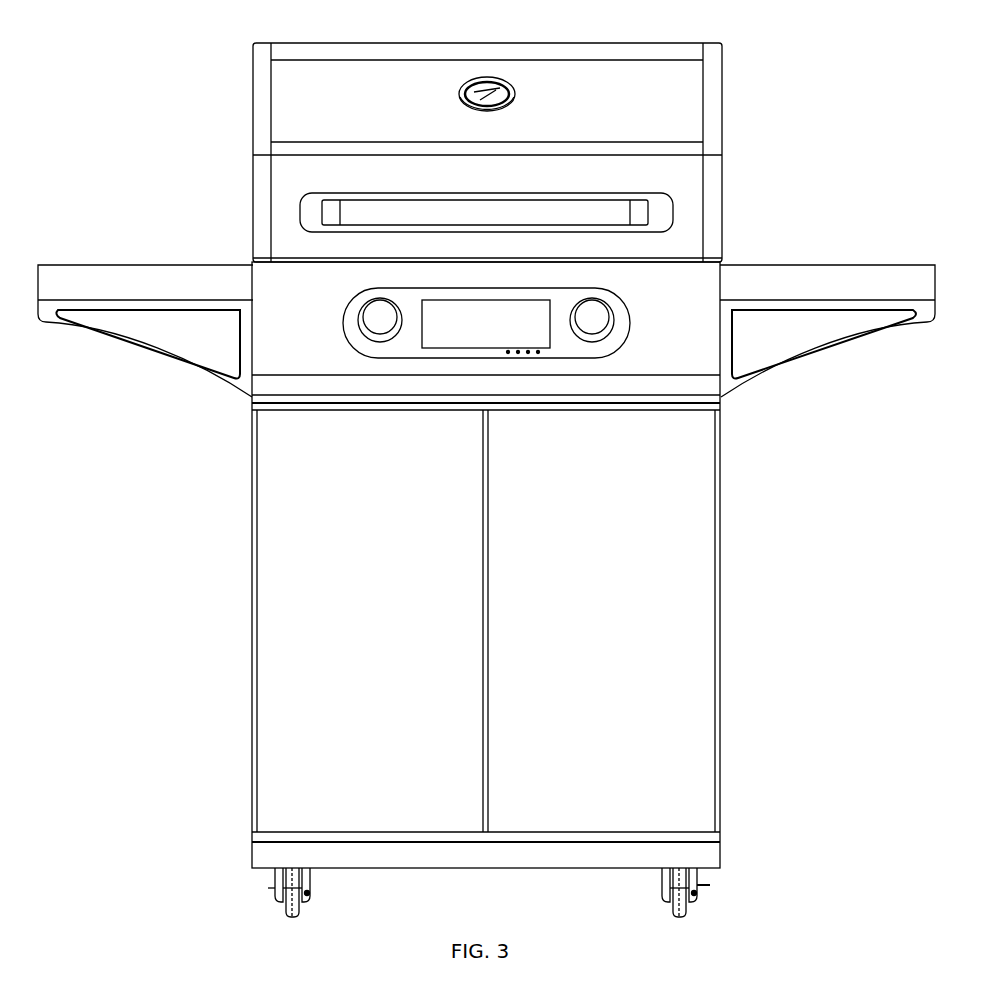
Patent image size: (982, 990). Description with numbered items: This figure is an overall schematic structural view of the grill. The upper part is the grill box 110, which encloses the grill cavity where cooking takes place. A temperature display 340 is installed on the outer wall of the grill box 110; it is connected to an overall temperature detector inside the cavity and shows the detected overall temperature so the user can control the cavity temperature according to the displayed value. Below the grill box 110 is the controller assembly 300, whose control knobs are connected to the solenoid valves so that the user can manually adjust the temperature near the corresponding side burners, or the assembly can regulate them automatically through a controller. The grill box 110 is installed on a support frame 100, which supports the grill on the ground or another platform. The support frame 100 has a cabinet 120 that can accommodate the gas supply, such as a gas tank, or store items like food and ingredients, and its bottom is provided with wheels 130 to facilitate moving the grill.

The support frame 100 is at (127, 525).
The grill box 110 is at (246, 137).
The cabinet 120 is at (243, 567).
The wheels 130 is at (267, 903).
The controller assembly 300 is at (640, 344).
The temperature display 340 is at (475, 71).